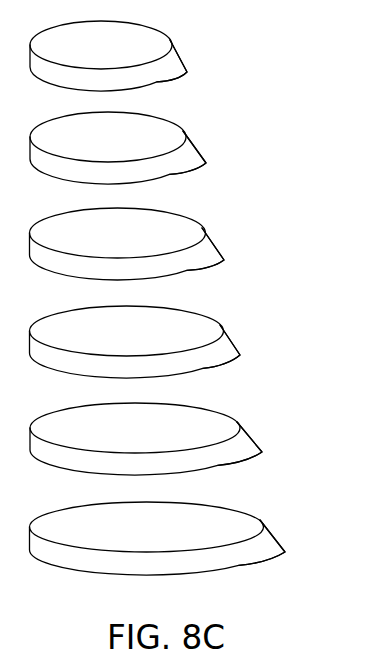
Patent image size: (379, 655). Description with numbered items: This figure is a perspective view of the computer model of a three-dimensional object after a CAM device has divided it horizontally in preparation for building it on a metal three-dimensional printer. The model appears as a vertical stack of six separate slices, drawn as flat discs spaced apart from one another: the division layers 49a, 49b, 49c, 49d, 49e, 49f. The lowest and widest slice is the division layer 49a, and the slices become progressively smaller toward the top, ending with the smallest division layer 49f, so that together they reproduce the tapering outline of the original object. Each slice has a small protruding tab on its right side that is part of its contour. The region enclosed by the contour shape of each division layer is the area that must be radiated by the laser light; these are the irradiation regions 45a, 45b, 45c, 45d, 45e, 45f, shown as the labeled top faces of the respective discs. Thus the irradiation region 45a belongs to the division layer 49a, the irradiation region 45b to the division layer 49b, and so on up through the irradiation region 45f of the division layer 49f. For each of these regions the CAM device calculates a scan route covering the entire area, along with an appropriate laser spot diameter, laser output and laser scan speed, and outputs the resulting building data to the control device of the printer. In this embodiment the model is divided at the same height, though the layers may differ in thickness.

The irradiation region 45a is at (167, 540).
The irradiation region 45b is at (155, 442).
The irradiation region 45c is at (147, 344).
The irradiation region 45d is at (138, 248).
The irradiation region 45e is at (129, 150).
The irradiation region 45f is at (122, 56).
The division layer 49a is at (267, 550).
The division layer 49b is at (241, 448).
The division layer 49c is at (220, 352).
The division layer 49d is at (208, 255).
The division layer 49e is at (193, 160).
The division layer 49f is at (175, 64).